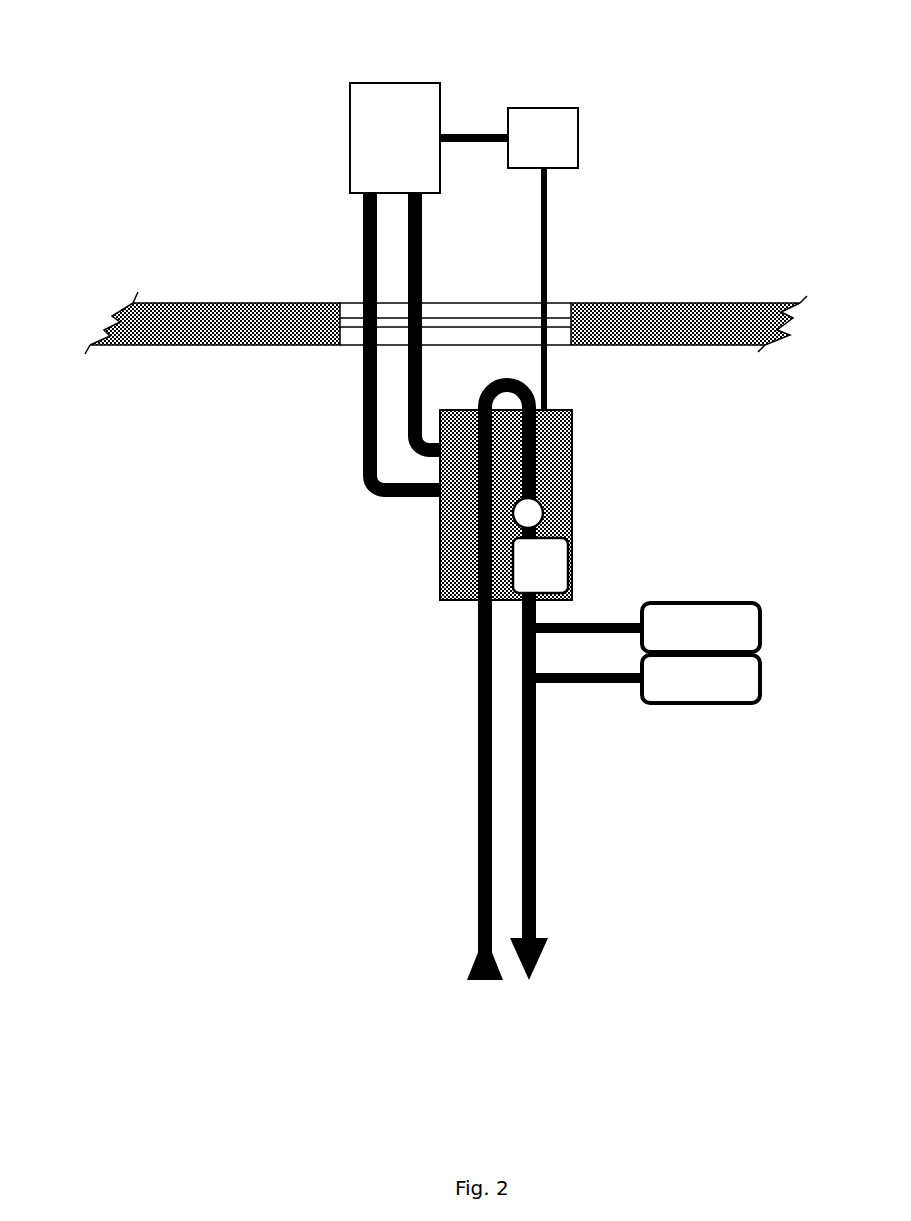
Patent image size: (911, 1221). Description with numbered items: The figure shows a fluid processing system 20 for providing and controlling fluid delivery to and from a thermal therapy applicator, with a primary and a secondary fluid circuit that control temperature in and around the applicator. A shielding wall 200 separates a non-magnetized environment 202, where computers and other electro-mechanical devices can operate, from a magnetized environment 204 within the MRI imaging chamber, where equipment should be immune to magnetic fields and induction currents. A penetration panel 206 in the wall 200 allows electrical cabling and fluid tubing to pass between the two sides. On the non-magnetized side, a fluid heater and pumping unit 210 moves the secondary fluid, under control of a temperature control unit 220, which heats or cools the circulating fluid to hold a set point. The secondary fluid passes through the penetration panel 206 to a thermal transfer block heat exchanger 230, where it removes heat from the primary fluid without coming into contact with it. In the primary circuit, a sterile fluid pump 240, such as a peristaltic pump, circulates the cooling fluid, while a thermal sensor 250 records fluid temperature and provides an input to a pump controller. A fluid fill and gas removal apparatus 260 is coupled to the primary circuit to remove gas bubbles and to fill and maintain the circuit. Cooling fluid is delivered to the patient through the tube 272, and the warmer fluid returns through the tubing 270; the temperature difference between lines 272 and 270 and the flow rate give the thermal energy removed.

The system 20 is at (147, 100).
The shielding wall 200 is at (103, 318).
The non-magnetized environment 202 is at (258, 287).
The magnetized environment 204 is at (258, 370).
The penetration panel 206 is at (497, 300).
The fluid heater and pumping unit 210 is at (386, 82).
The temperature control unit 220 is at (540, 108).
The thermal transfer block heat exchanger 230 is at (452, 567).
The sterile fluid pump 240 is at (560, 548).
The thermal sensor 250 is at (545, 507).
The fluid fill and gas removal apparatus 260 is at (757, 706).
The tubing 270 is at (478, 925).
The tube 272 is at (528, 815).